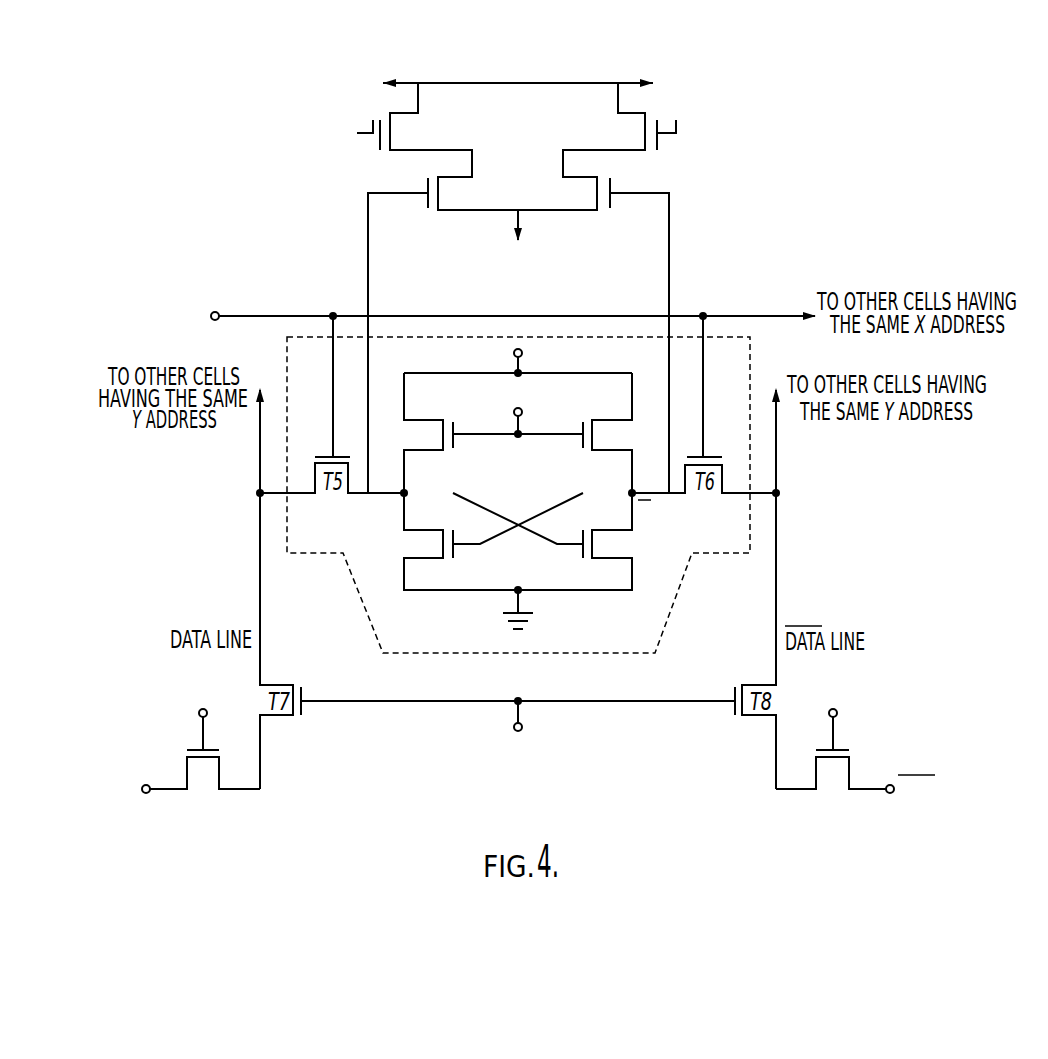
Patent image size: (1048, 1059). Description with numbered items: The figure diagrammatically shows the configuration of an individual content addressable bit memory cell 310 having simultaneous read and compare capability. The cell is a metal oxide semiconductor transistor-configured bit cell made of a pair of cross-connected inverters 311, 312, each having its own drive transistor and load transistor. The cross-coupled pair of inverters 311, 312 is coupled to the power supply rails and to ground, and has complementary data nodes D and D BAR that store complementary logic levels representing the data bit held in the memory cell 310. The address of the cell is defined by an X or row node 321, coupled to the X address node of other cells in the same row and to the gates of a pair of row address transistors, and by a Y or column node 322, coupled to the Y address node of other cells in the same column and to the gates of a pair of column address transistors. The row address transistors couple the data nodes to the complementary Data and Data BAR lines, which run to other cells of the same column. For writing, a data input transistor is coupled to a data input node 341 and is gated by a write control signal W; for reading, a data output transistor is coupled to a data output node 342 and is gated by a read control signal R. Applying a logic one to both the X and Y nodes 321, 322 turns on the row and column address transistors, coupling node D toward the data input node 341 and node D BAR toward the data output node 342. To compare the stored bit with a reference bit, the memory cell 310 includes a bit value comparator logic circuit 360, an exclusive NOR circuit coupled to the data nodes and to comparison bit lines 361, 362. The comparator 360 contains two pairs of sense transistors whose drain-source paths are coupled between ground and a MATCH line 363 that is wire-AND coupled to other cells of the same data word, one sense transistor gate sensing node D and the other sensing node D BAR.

The memory cell 310 is at (524, 459).
The inverter 311 is at (423, 479).
The inverter 312 is at (617, 485).
The X node 321 is at (217, 312).
The Y node 322 is at (523, 729).
The data input node 341 is at (148, 786).
The data output node 342 is at (887, 786).
The bit value comparator logic circuit 360 is at (519, 267).
The comparison bit line 361 is at (369, 134).
The comparison bit line 362 is at (676, 126).
The MATCH line 363 is at (512, 83).